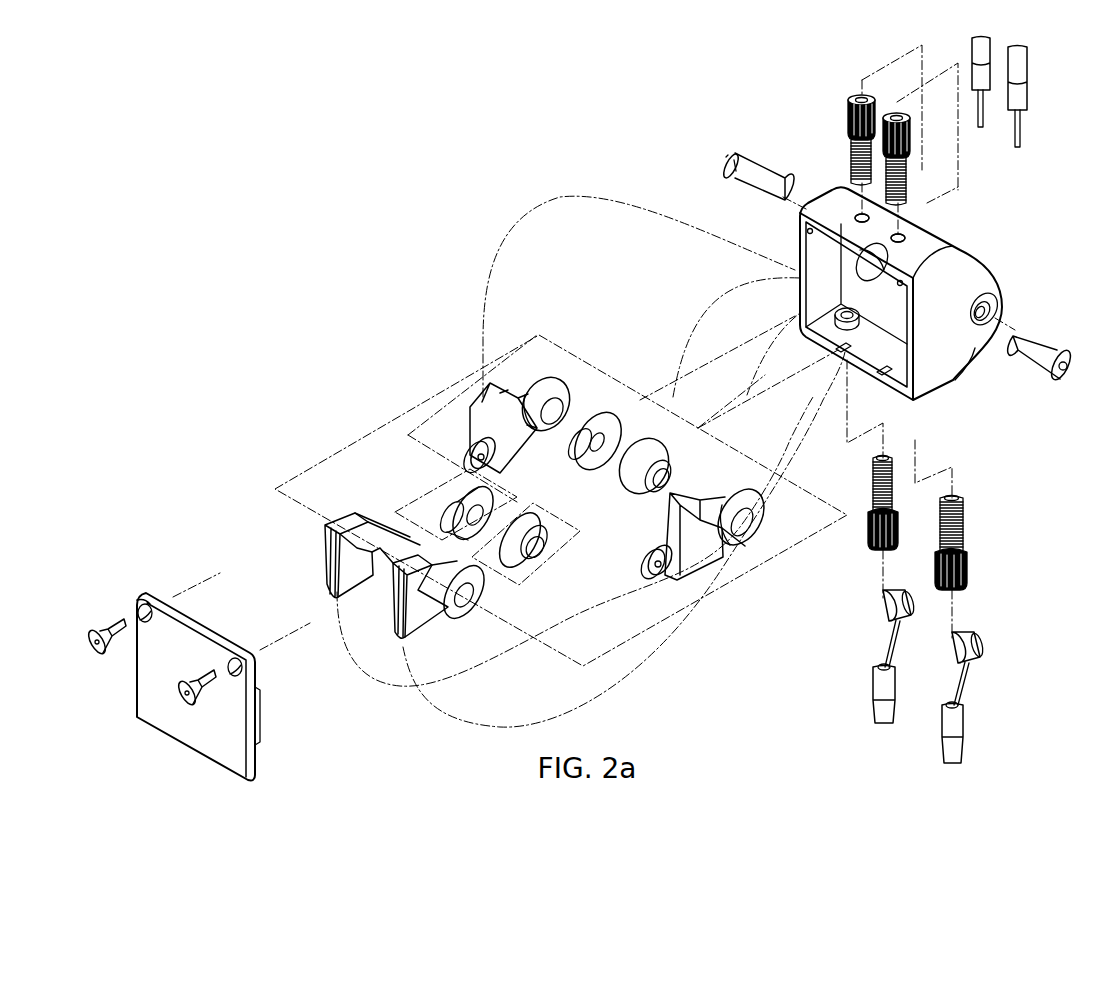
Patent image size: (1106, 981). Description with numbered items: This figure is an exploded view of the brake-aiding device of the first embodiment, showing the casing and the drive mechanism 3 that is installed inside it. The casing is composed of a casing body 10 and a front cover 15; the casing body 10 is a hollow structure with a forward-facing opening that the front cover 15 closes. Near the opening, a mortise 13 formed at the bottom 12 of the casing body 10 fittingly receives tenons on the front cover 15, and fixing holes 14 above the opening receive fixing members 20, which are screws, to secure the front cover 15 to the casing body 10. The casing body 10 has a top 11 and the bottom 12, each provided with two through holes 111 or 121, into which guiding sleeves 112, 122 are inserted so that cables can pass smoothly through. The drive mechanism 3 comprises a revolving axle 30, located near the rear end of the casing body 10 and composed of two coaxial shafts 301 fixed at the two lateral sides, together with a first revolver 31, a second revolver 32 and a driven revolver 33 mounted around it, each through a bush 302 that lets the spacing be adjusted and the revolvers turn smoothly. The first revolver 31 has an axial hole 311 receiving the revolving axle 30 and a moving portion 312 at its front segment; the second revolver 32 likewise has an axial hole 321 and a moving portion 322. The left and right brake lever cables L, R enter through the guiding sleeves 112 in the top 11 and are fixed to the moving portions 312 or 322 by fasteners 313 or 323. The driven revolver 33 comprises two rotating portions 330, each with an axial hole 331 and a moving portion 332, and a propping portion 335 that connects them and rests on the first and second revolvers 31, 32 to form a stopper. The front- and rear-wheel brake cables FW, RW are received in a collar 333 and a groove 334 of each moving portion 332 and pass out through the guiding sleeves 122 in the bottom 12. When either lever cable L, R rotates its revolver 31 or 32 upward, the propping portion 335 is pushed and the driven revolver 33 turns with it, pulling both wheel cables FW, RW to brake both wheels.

The drive mechanism 3 is at (318, 368).
The casing body 10 is at (900, 291).
The top 11 is at (937, 248).
The through holes 111 is at (858, 215).
The guiding sleeves 112 is at (883, 122).
The bottom 12 is at (977, 352).
The through holes 121 is at (953, 380).
The guiding sleeves 122 is at (869, 517).
The mortise 13 is at (843, 350).
The fixing holes 14 is at (806, 231).
The front cover 15 is at (193, 737).
The fixing members 20 is at (116, 622).
The revolving axle 30 is at (887, 259).
The shafts 301 is at (737, 157).
The bush 302 is at (640, 440).
The first revolver 31 is at (711, 526).
The axial hole 311 is at (742, 515).
The moving portion 312 is at (693, 560).
The fastener 313 is at (657, 553).
The second revolver 32 is at (489, 410).
The axial hole 321 is at (553, 405).
The moving portion 322 is at (513, 448).
The fastener 323 is at (487, 467).
The driven revolver 33 is at (401, 601).
The rotating portions 330 is at (401, 585).
The axial hole 331 is at (476, 593).
The moving portion 332 is at (340, 597).
The collar 333 is at (386, 528).
The groove 334 is at (330, 570).
The propping portion 335 is at (366, 548).
The left brake lever cable L is at (1022, 120).
The right brake lever cable R is at (983, 127).
The front-wheel brake cable FW is at (883, 640).
The rear-wheel brake cable RW is at (962, 690).